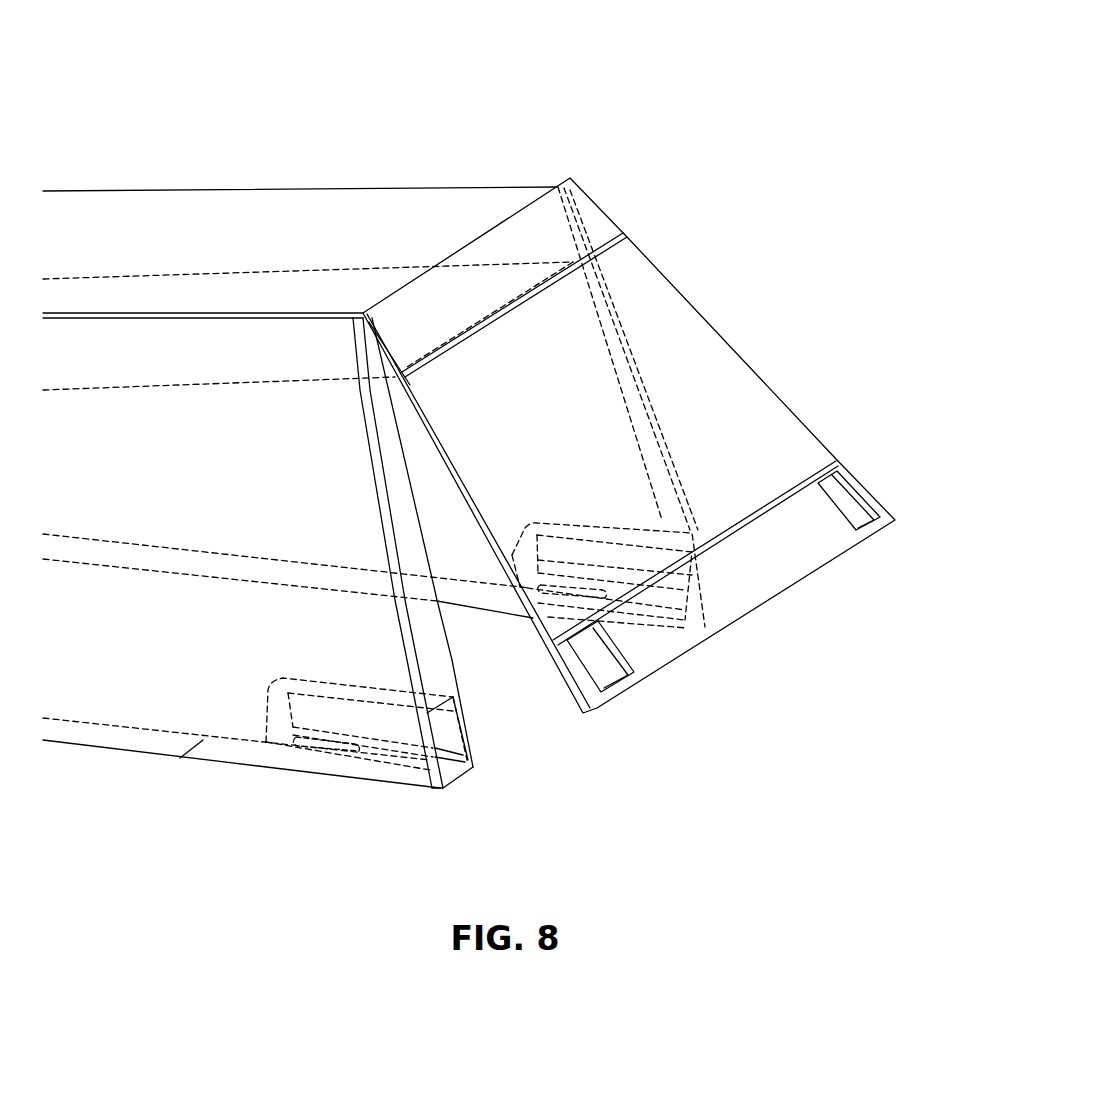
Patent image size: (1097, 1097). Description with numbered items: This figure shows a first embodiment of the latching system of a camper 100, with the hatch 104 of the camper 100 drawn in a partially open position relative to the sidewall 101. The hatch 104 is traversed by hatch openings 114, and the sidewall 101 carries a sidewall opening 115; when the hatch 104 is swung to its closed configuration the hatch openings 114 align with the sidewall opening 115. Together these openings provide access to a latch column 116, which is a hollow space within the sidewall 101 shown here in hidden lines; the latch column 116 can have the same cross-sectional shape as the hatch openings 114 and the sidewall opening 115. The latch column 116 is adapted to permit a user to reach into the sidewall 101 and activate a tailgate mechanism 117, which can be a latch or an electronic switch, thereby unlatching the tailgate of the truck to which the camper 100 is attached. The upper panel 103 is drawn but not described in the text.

The camper 100 is at (590, 73).
The sidewall 101 is at (157, 675).
The top panel 103 is at (328, 208).
The hatch 104 is at (675, 323).
The hatch opening 114 is at (870, 490).
The sidewall opening 115 is at (450, 735).
The latch column 116 is at (283, 725).
The tailgate mechanism 117 is at (320, 763).